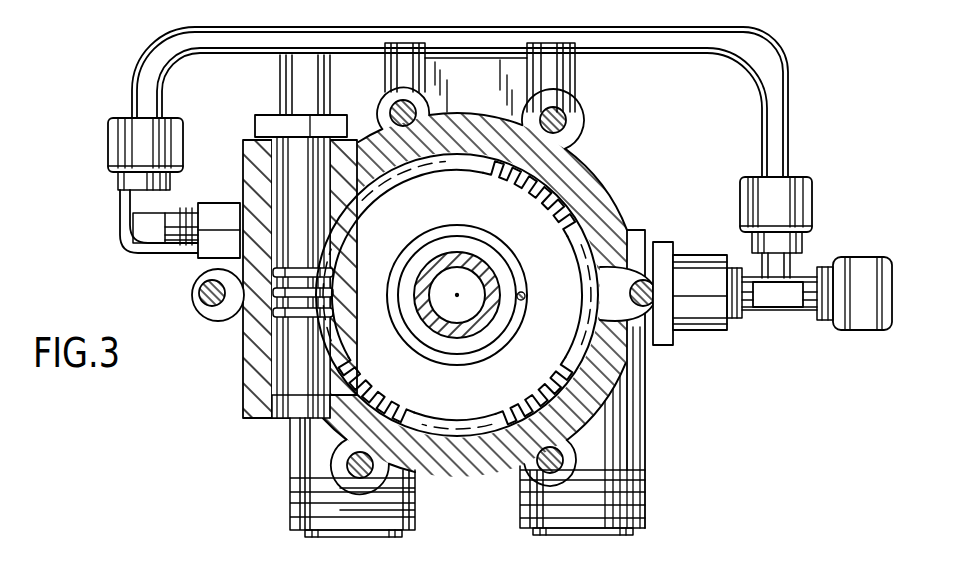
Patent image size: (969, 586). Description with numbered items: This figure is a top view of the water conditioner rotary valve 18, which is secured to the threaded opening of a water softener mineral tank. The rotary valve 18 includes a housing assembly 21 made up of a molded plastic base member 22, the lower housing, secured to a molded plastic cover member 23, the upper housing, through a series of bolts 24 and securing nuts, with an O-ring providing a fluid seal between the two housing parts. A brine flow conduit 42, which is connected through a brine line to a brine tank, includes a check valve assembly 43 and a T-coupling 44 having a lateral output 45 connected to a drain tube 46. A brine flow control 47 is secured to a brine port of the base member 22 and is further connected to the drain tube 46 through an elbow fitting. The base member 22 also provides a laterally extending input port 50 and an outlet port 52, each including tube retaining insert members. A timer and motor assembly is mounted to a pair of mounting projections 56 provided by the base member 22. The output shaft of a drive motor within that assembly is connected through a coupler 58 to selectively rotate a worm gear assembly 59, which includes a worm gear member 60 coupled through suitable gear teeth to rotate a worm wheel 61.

The water conditioner rotary valve 18 is at (266, 456).
The housing assembly 21 is at (653, 417).
The base member 22 is at (628, 460).
The cover member 23 is at (597, 226).
The bolts 24 is at (347, 470).
The brine flow conduit 42 is at (802, 334).
The check valve assembly 43 is at (704, 318).
The T-coupling 44 is at (760, 312).
The lateral output 45 is at (768, 262).
The drain tube 46 is at (714, 27).
The brine flow control 47 is at (227, 203).
The input port 50 is at (583, 537).
The outlet port 52 is at (378, 538).
The mounting projections 56 is at (388, 76).
The coupler 58 is at (290, 93).
The worm gear assembly 59 is at (300, 385).
The worm gear member 60 is at (299, 328).
The worm wheel 61 is at (535, 230).